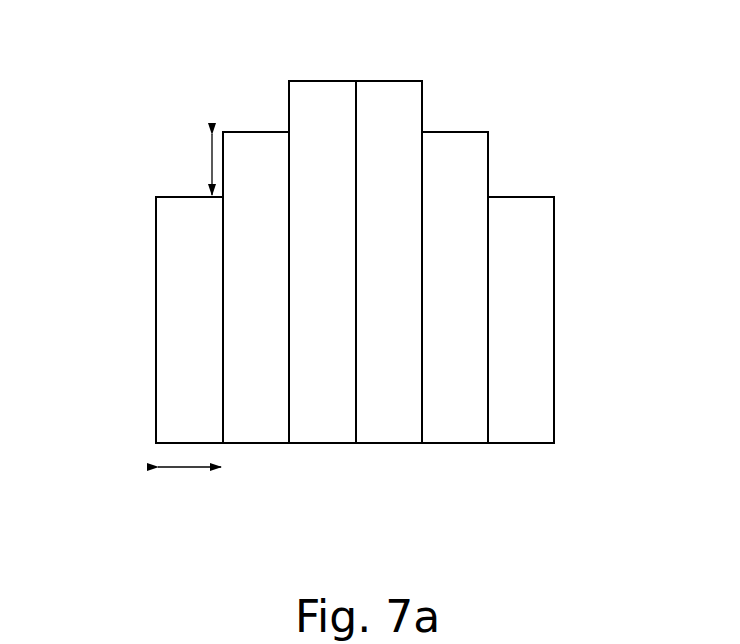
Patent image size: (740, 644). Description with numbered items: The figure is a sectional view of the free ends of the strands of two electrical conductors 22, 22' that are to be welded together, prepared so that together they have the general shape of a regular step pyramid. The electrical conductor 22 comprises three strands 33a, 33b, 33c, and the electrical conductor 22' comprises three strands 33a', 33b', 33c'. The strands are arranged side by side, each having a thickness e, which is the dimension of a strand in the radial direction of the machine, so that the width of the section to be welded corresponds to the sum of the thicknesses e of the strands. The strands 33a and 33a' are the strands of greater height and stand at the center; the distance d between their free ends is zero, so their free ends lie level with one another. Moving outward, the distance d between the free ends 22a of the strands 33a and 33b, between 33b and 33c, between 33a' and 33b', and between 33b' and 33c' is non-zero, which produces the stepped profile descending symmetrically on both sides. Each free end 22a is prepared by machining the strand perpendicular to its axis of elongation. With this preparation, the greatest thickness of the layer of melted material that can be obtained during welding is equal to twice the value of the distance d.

The electrical conductor 22 is at (222, 284).
The electrical conductor 22' is at (494, 300).
The free end 22a is at (250, 131).
The strand 33a is at (320, 307).
The strand 33b is at (251, 333).
The strand 33c is at (169, 365).
The strand 33a' is at (389, 307).
The strand 33b' is at (458, 333).
The strand 33c' is at (530, 365).
The distance d is at (200, 164).
The thickness e is at (189, 480).